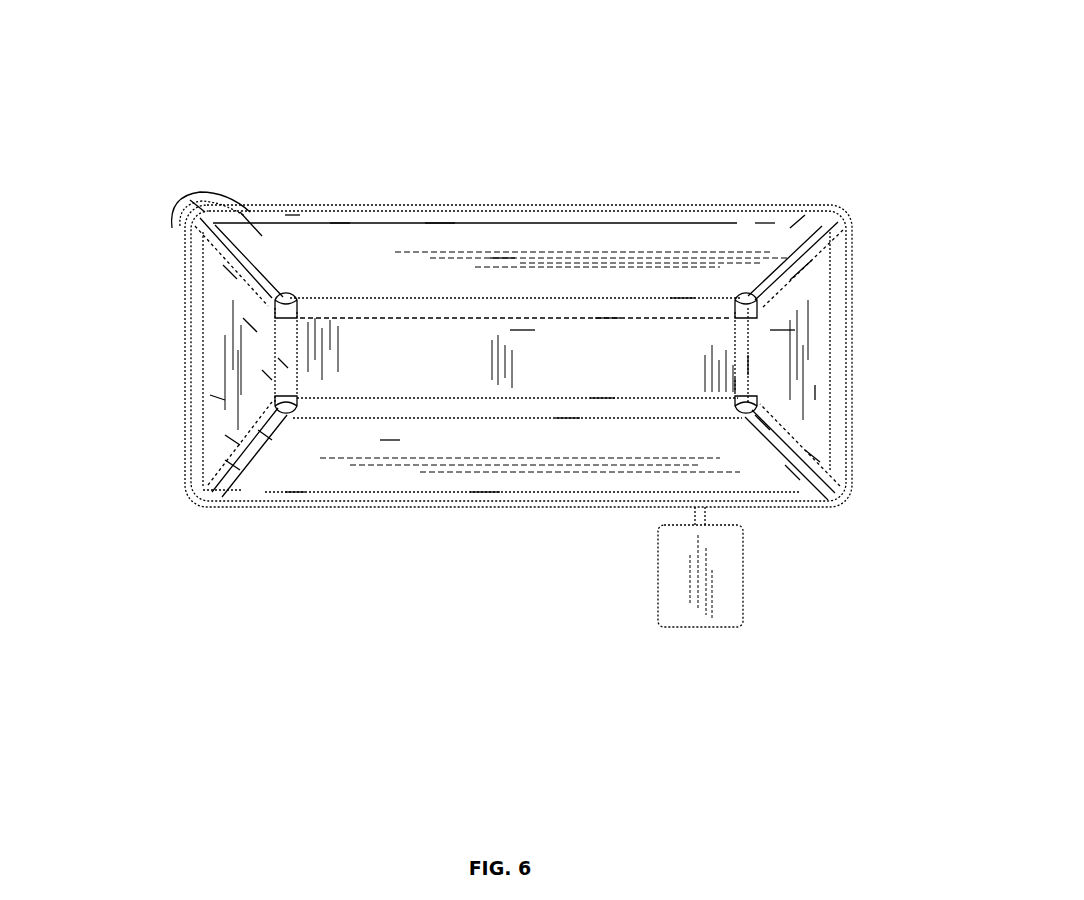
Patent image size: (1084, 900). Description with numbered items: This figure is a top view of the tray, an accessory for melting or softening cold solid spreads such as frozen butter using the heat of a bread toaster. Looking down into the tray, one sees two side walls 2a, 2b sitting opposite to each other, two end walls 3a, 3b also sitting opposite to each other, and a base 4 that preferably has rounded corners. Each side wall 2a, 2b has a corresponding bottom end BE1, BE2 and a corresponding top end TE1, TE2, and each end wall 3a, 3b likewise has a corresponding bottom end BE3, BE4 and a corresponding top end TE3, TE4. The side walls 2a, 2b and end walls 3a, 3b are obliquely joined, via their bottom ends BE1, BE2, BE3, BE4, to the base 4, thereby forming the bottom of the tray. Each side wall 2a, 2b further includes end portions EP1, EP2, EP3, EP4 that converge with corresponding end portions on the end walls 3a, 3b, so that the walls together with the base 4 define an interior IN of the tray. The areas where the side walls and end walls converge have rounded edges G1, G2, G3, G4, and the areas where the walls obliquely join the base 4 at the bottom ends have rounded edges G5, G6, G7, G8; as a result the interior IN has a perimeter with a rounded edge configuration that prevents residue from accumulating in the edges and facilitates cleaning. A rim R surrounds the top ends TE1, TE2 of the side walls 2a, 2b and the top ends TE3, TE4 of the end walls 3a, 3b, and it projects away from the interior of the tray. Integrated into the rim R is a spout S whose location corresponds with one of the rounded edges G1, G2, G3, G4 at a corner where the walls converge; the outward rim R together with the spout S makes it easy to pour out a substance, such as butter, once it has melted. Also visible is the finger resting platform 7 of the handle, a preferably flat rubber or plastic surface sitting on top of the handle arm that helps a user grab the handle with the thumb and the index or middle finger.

The end portion EP1 is at (250, 220).
The end portion EP2 is at (800, 220).
The end portion EP3 is at (232, 467).
The end portion EP4 is at (793, 473).
The spout S is at (198, 208).
The rim R is at (338, 222).
The rounded edge G1 is at (291, 218).
The rounded edge G2 is at (765, 221).
The rounded edge G3 is at (265, 433).
The rounded edge G4 is at (762, 423).
The rounded edge G5 is at (607, 316).
The rounded edge G6 is at (602, 405).
The rounded edge G7 is at (283, 363).
The rounded edge G8 is at (740, 383).
The top end TE1 is at (438, 232).
The top end TE2 is at (483, 485).
The top end TE3 is at (217, 398).
The top end TE4 is at (822, 393).
The bottom end BE1 is at (683, 292).
The bottom end BE2 is at (567, 420).
The bottom end BE3 is at (267, 375).
The bottom end BE4 is at (753, 365).
The side wall 2a is at (500, 270).
The side wall 2b is at (392, 438).
The end wall 3a is at (250, 325).
The end wall 3b is at (782, 333).
The base 4 is at (520, 337).
The finger resting platform 7 is at (685, 597).
The interior IN is at (565, 363).